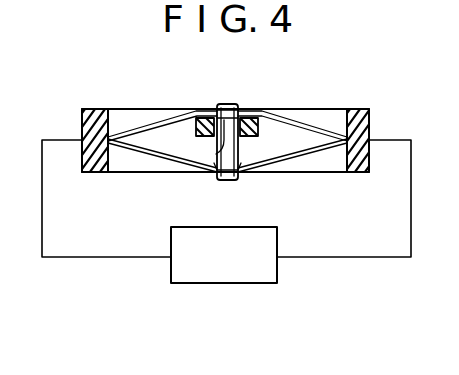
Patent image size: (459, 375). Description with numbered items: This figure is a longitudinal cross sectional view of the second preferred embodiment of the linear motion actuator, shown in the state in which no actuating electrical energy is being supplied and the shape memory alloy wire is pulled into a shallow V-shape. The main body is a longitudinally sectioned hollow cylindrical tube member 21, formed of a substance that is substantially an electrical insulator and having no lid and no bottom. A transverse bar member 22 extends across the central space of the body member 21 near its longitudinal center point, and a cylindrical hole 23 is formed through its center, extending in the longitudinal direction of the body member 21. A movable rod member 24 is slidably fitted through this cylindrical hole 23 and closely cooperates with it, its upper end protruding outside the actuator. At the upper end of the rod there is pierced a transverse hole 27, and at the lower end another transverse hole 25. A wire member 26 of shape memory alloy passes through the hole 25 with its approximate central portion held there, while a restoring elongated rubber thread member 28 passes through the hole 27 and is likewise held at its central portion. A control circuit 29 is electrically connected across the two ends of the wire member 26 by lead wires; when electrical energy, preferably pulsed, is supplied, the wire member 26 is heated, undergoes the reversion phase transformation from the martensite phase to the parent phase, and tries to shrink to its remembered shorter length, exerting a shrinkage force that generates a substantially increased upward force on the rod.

The hollow cylindrical tube member 21 is at (83, 120).
The transverse bar member 22 is at (250, 117).
The cylindrical hole 23 is at (208, 162).
The movable rod member 24 is at (221, 106).
The transverse hole 25 is at (243, 166).
The wire member 26 is at (131, 157).
The transverse hole 27 is at (211, 108).
The restoring elongated rubber thread member 28 is at (308, 115).
The control circuit 29 is at (278, 237).